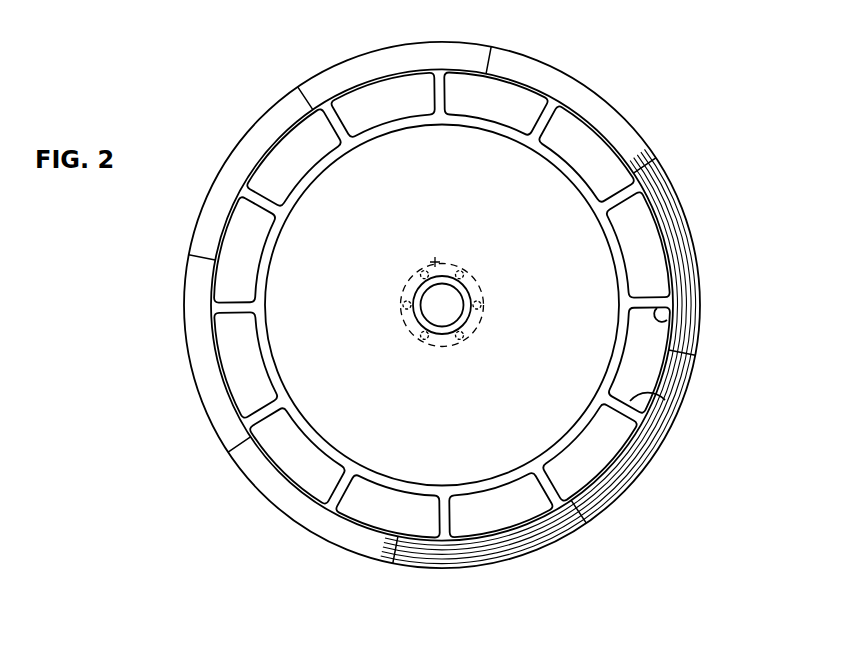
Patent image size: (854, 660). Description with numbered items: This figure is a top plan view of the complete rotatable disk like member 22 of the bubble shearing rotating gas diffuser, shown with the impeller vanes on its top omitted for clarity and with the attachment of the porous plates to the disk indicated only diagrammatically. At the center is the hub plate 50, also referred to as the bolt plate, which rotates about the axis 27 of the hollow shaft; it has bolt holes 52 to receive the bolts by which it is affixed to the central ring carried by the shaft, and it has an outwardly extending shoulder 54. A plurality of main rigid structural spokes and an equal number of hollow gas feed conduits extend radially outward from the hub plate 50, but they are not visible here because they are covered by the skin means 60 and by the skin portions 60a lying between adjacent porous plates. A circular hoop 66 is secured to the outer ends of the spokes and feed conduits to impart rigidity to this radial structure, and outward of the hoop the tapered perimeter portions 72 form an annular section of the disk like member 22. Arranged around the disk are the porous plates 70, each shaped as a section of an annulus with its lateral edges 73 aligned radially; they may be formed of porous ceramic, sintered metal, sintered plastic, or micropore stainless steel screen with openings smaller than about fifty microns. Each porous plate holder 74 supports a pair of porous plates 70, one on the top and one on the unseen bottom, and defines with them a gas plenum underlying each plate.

The disk like member 22 is at (683, 197).
The axis 27 is at (450, 300).
The hub plate 50 is at (414, 316).
The bolt holes 52 is at (482, 303).
The shoulder 54 is at (435, 262).
The skin means 60 is at (355, 259).
The skin portions 60a is at (648, 297).
The circular hoop 66 is at (608, 139).
The porous plates 70 is at (508, 98).
The tapered perimeter portions 72 is at (258, 137).
The lateral edges 73 is at (667, 320).
The porous plate holder 74 is at (485, 481).